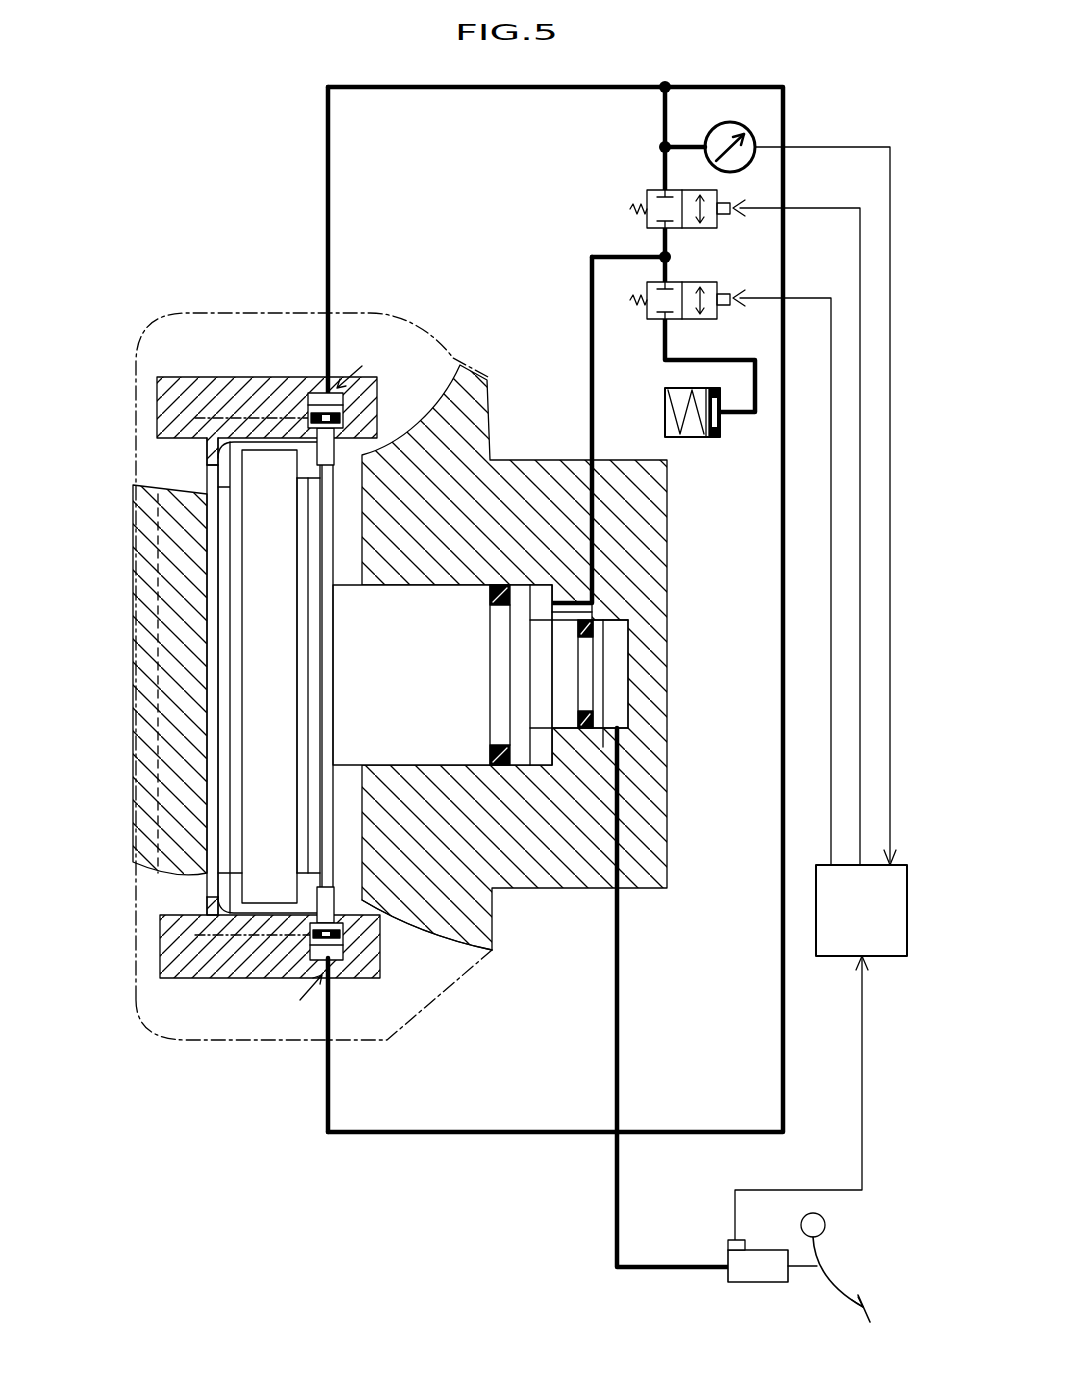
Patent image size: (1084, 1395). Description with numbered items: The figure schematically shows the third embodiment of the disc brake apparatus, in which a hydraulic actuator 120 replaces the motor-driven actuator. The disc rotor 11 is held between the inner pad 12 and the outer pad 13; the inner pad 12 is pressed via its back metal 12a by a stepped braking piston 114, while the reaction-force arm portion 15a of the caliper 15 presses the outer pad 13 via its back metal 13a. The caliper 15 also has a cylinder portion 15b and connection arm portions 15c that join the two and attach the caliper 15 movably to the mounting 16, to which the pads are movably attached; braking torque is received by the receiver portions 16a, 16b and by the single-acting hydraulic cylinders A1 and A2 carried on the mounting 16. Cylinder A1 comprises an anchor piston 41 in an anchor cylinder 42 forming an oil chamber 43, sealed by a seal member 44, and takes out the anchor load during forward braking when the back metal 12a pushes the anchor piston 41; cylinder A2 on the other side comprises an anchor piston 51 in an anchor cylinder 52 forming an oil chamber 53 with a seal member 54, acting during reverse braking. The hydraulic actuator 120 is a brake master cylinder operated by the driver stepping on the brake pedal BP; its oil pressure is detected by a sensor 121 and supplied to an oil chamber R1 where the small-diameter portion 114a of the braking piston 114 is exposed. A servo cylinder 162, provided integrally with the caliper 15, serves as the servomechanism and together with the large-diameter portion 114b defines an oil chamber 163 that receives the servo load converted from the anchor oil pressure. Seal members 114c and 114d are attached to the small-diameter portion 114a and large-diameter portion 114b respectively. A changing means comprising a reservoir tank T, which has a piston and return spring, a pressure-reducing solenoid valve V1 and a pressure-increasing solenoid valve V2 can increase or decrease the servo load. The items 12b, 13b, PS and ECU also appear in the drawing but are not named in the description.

The disc rotor 11 is at (235, 965).
The inner pad 12 is at (312, 547).
The back metal 12a is at (325, 610).
The second surface of piezoelectric element 12b is at (310, 656).
The outer pad 13 is at (235, 843).
The back metal 13a is at (212, 797).
The frame inner wall 13b is at (232, 728).
The caliper 15 is at (470, 377).
The reaction-force arm portion 15a is at (150, 650).
The cylinder portion 15b is at (422, 783).
The connection arm portions 15c is at (203, 322).
The mounting 16 is at (238, 377).
The receiver portion 16a is at (207, 457).
The receiver portion 16b is at (205, 905).
The anchor piston 41 is at (327, 448).
The anchor cylinder 42 is at (345, 400).
The oil chamber 43 is at (320, 393).
The seal member 44 is at (345, 420).
The anchor piston 51 is at (318, 908).
The anchor cylinder 52 is at (345, 963).
The oil chamber 53 is at (337, 978).
The seal member 54 is at (345, 940).
The stepped braking piston 114 is at (455, 600).
The small-diameter portion 114a is at (583, 720).
The large-diameter portion 114b is at (517, 698).
The seal member 114c is at (603, 625).
The seal member 114d is at (500, 768).
The servo cylinder 162 is at (542, 572).
The oil chamber 163 is at (540, 605).
The oil chamber R1 is at (617, 668).
The single-acting hydraulic cylinder A1 is at (360, 364).
The single-acting hydraulic cylinder A2 is at (293, 1002).
The pressure sensor PS is at (748, 132).
The pressure-reducing solenoid valve V1 is at (690, 318).
The pressure-increasing solenoid valve V2 is at (690, 228).
The reservoir tank T is at (712, 437).
The electronic control unit ECU is at (861, 910).
The hydraulic actuator 120 is at (748, 1283).
The sensor 121 is at (728, 1246).
The brake pedal BP is at (870, 1318).